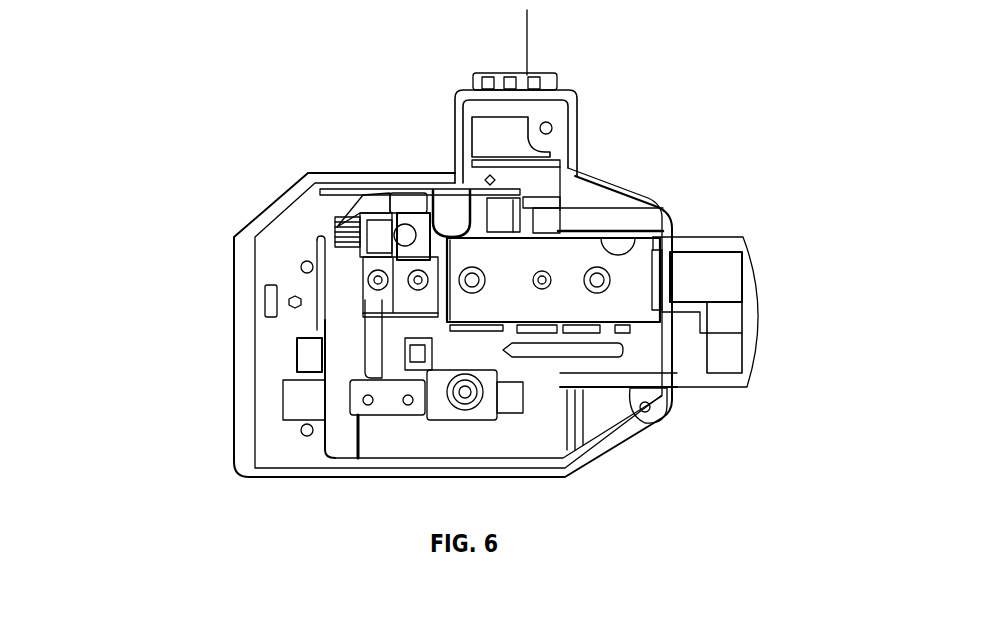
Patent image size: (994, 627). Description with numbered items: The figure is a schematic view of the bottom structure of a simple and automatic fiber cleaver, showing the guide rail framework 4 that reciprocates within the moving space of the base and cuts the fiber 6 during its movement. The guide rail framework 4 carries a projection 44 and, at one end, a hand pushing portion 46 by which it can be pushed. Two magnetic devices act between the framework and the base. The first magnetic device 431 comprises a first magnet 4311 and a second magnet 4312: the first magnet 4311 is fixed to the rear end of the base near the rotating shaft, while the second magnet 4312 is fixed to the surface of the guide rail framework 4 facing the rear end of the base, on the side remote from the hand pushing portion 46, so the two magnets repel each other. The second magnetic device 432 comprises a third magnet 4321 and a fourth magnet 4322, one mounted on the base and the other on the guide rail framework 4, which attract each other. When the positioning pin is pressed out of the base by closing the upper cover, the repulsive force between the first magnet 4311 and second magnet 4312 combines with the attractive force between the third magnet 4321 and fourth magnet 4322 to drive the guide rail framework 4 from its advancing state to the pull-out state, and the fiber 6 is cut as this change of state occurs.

The guide rail framework 4 is at (692, 382).
The fiber 6 is at (529, 63).
The projection 44 is at (478, 192).
The hand pushing portion 46 is at (752, 310).
The first magnetic device 431 is at (241, 326).
The first magnet 4311 is at (300, 361).
The second magnet 4312 is at (405, 358).
The second magnetic device 432 is at (681, 190).
The third magnet 4321 is at (546, 212).
The fourth magnet 4322 is at (540, 202).